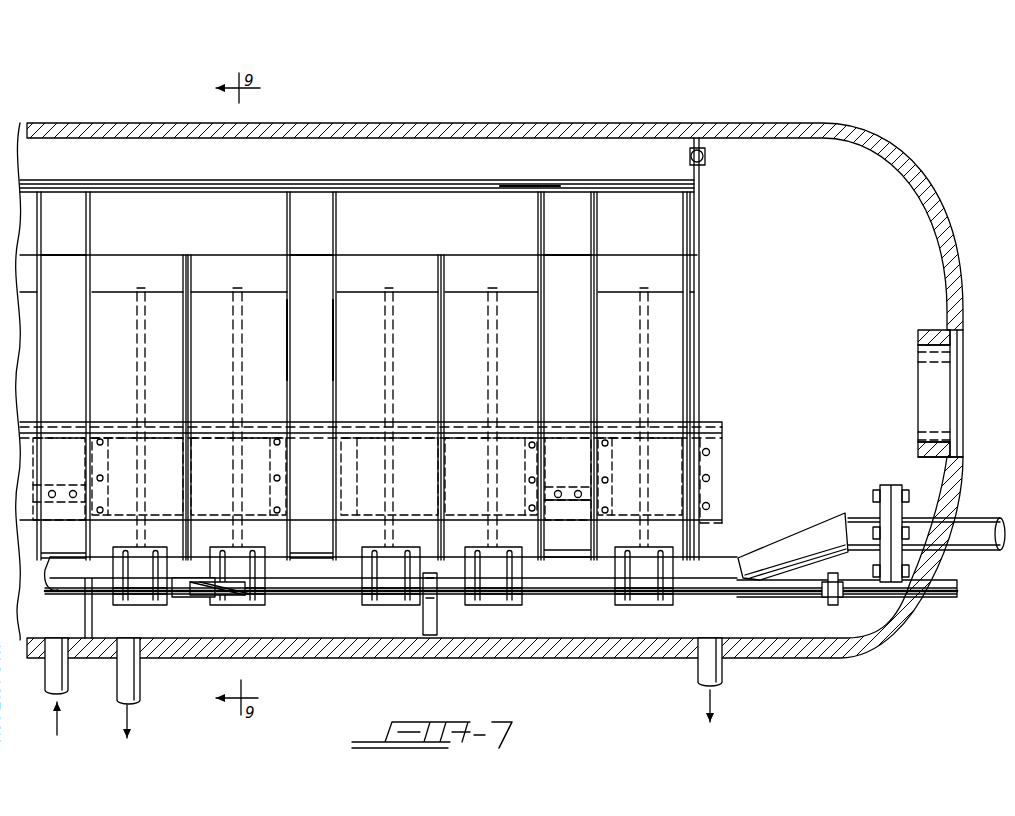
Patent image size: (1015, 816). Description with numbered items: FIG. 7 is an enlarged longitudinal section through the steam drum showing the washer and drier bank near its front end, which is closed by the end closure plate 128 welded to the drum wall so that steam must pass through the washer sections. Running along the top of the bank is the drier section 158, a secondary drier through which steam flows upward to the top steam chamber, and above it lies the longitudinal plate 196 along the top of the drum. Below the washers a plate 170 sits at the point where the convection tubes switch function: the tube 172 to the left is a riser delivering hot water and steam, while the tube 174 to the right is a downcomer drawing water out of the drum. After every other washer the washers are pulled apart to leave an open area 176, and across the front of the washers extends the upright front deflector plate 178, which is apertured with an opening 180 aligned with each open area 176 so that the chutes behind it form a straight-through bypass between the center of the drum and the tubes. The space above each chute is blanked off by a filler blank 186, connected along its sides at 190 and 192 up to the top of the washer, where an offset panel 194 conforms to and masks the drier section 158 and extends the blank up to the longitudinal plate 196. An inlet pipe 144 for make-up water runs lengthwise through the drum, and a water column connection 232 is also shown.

The end closure plate 128 is at (700, 204).
The inlet pipe 144 is at (790, 538).
The drier section 158 is at (178, 196).
The plate 170 is at (93, 623).
The riser tube 172 is at (64, 666).
The downcomer tube 174 is at (140, 673).
The open area 176 is at (61, 208).
The front deflector plate 178 is at (722, 450).
The opening 180 is at (55, 442).
The filler blank 186 is at (68, 364).
The side connection 190 is at (288, 340).
The side connection 192 is at (334, 322).
The offset panel 194 is at (78, 238).
The longitudinal plate 196 is at (510, 190).
The water column connection 232 is at (795, 597).